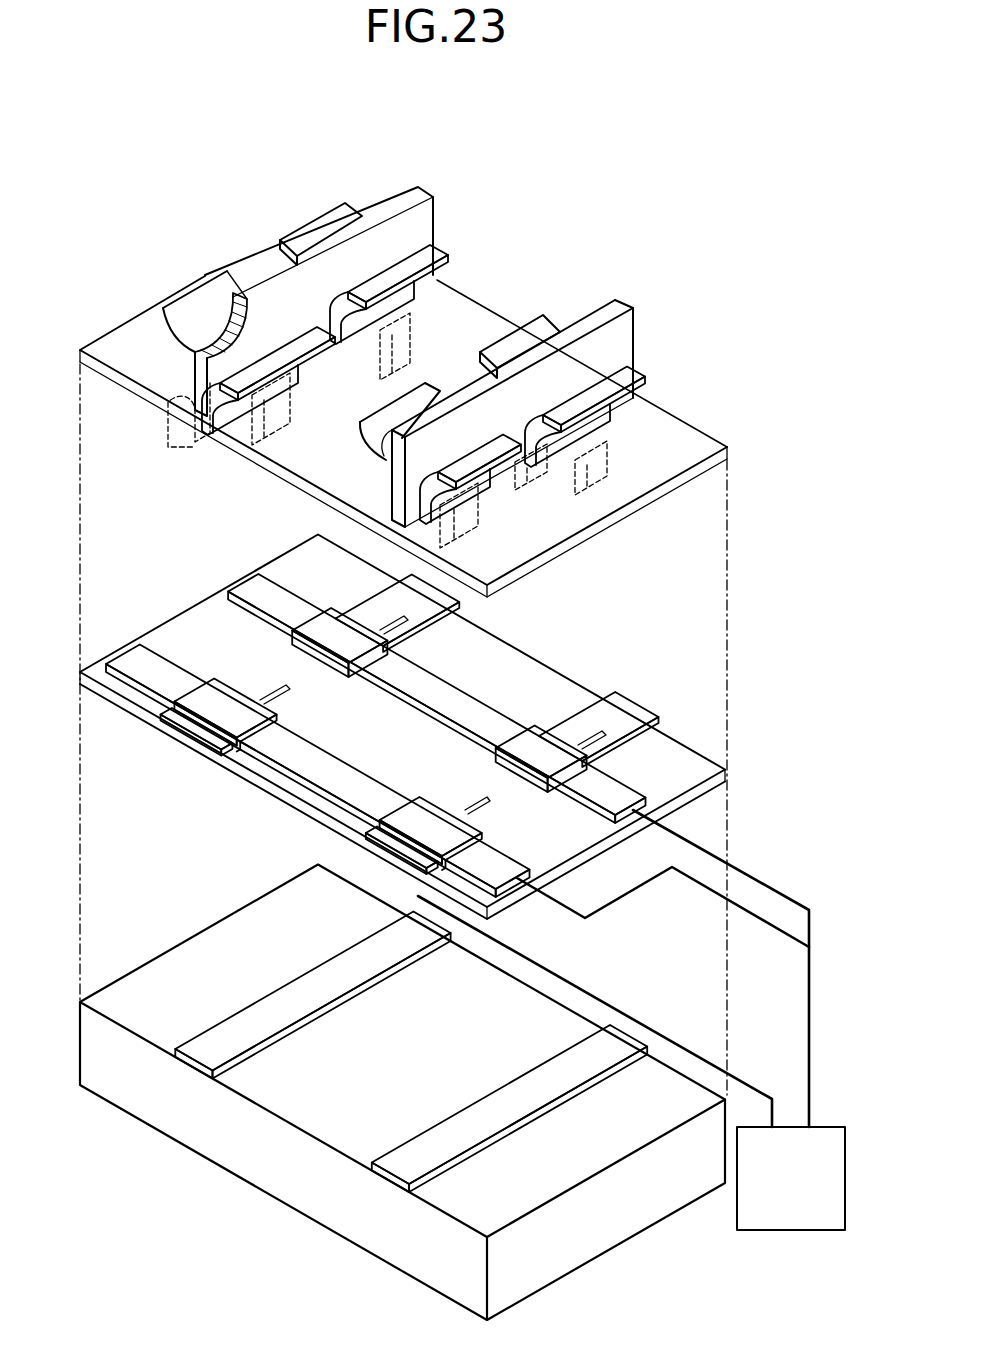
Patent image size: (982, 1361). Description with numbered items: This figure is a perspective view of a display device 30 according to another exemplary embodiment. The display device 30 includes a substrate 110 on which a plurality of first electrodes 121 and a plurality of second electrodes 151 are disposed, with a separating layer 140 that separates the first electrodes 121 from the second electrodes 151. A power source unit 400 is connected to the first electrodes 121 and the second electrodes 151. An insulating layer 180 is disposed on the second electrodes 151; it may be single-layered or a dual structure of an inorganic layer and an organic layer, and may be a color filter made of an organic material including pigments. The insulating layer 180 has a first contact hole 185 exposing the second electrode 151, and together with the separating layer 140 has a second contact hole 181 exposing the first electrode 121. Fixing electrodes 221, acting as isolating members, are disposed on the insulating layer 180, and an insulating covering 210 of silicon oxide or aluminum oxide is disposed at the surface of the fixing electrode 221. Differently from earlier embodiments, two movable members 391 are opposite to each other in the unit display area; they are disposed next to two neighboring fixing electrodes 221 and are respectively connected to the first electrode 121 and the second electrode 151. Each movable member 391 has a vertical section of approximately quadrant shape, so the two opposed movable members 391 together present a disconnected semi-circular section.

The display device 30 is at (511, 122).
The substrate 110 is at (278, 1177).
The first electrode 121 is at (407, 1167).
The separating layer 140 is at (217, 615).
The second electrode 151 is at (223, 705).
The insulating layer 180 is at (160, 372).
The second contact hole 181 is at (240, 410).
The first contact hole 185 is at (183, 442).
The insulating covering 210 is at (207, 303).
The fixing electrode 221 is at (218, 318).
The movable member 391 is at (285, 342).
The power source unit 400 is at (760, 1232).